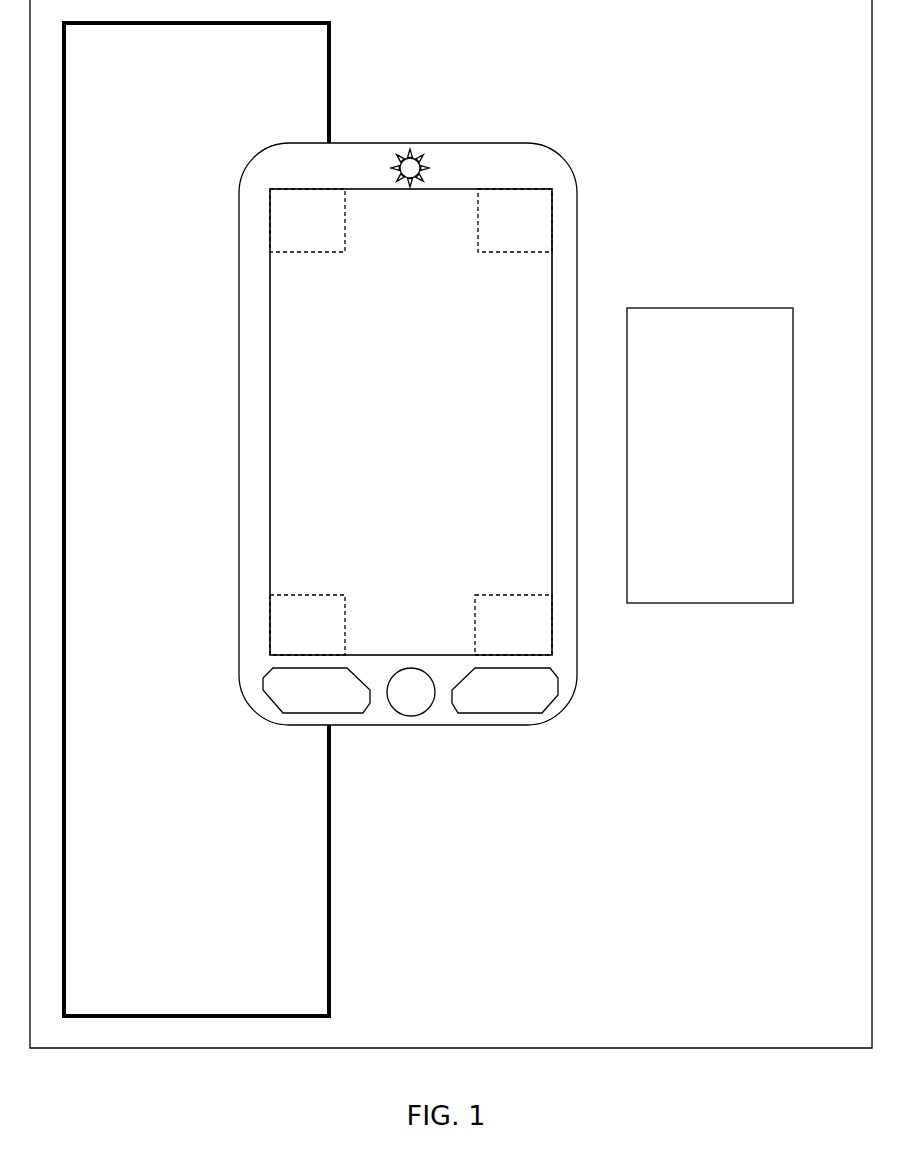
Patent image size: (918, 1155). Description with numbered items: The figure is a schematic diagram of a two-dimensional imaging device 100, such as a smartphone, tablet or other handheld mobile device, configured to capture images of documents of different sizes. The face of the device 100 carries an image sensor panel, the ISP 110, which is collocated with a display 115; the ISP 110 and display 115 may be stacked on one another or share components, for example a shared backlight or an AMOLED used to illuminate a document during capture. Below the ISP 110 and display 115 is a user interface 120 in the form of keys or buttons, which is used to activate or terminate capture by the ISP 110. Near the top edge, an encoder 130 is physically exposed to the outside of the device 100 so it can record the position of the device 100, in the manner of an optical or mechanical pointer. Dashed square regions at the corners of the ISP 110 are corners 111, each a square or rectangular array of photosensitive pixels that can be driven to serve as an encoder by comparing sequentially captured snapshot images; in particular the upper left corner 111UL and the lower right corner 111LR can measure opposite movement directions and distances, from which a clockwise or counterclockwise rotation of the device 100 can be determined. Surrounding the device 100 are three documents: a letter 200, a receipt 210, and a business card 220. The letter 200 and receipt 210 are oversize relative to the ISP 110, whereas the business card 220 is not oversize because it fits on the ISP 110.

The 2D imaging device 100 is at (540, 164).
The image sensor panel (ISP) 110 is at (495, 422).
The display 115 is at (542, 291).
The corner of ISP 111 is at (538, 222).
The upper left corner 111UL is at (315, 236).
The lower right corner 111LR is at (536, 622).
The user interface (UI) 120 is at (537, 692).
The encoder 130 is at (432, 161).
The letter 200 is at (818, 1016).
The receipt 210 is at (304, 1000).
The business card 220 is at (726, 583).